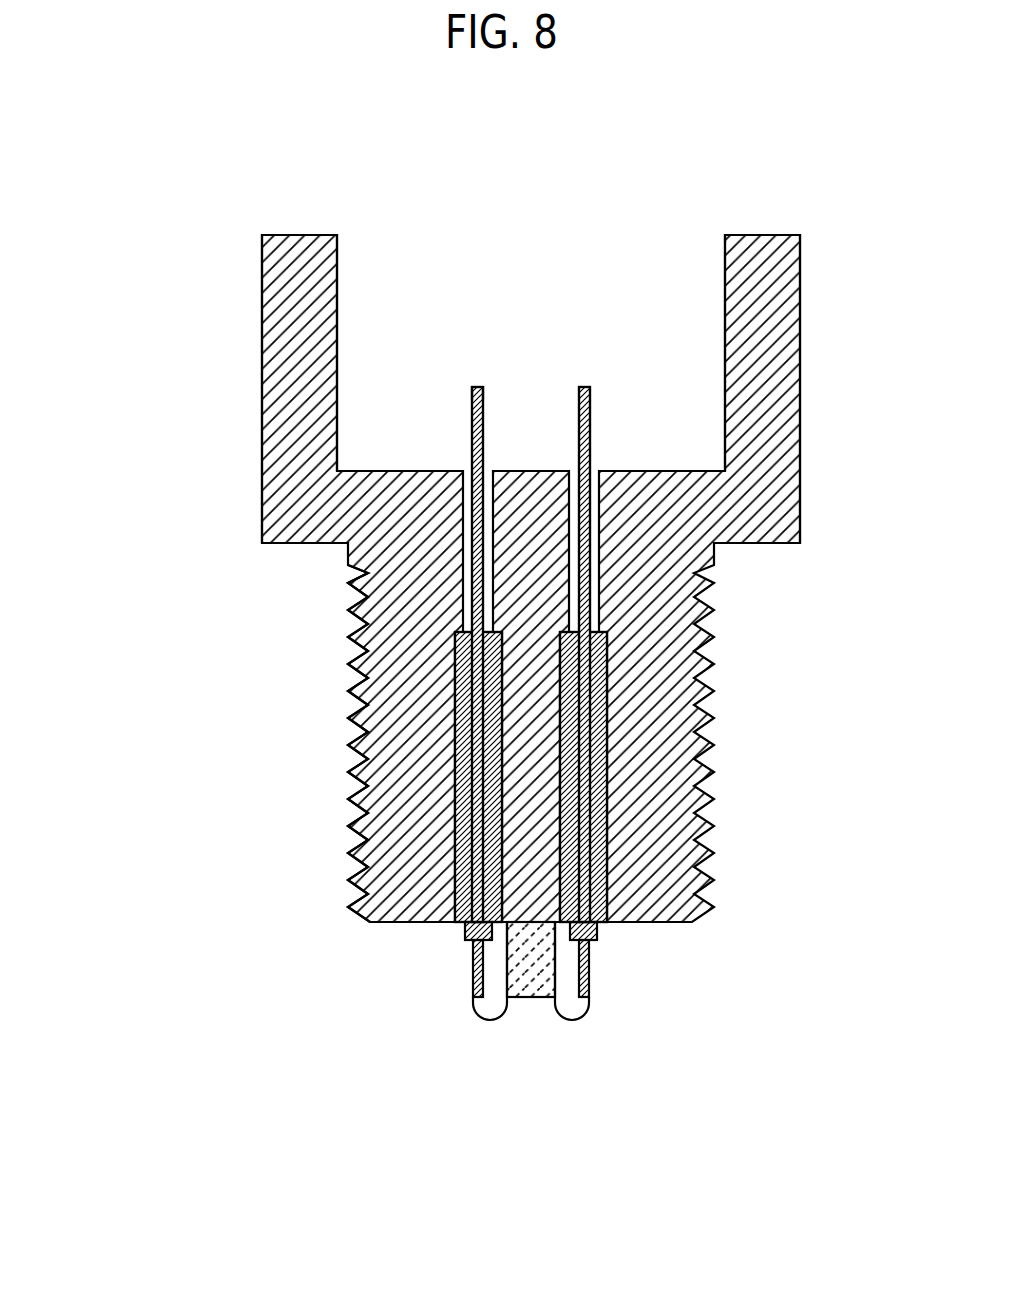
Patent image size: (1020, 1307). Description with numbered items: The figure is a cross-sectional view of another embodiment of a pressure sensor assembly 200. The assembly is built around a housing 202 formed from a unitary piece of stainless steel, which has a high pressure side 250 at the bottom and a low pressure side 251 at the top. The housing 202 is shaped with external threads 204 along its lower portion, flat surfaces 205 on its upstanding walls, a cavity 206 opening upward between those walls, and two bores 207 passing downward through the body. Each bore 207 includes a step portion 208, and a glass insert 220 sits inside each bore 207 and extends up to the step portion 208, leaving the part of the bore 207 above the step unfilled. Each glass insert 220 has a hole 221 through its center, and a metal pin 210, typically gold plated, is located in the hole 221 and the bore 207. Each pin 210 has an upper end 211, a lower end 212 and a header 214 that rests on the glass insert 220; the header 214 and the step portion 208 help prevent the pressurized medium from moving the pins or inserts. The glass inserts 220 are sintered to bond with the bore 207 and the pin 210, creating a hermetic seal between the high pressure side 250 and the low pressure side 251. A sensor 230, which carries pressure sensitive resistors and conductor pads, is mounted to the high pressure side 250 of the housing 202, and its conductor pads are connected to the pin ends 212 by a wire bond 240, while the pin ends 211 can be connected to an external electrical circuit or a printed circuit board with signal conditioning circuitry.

The pressure sensor assembly 200 is at (233, 180).
The housing 202 is at (260, 463).
The threads 204 is at (360, 748).
The flat surfaces 205 is at (260, 312).
The cavity 206 is at (495, 262).
The bore 207 is at (568, 525).
The step portion 208 is at (610, 713).
The metal pin 210 is at (470, 452).
The pin end 211 is at (472, 412).
The pin end 212 is at (473, 980).
The header 214 is at (465, 933).
The glass insert 220 is at (603, 928).
The hole 221 is at (477, 845).
The sensor 230 is at (540, 998).
The wire bond 240 is at (483, 1018).
The high pressure side 250 is at (687, 1102).
The low pressure side 251 is at (597, 210).